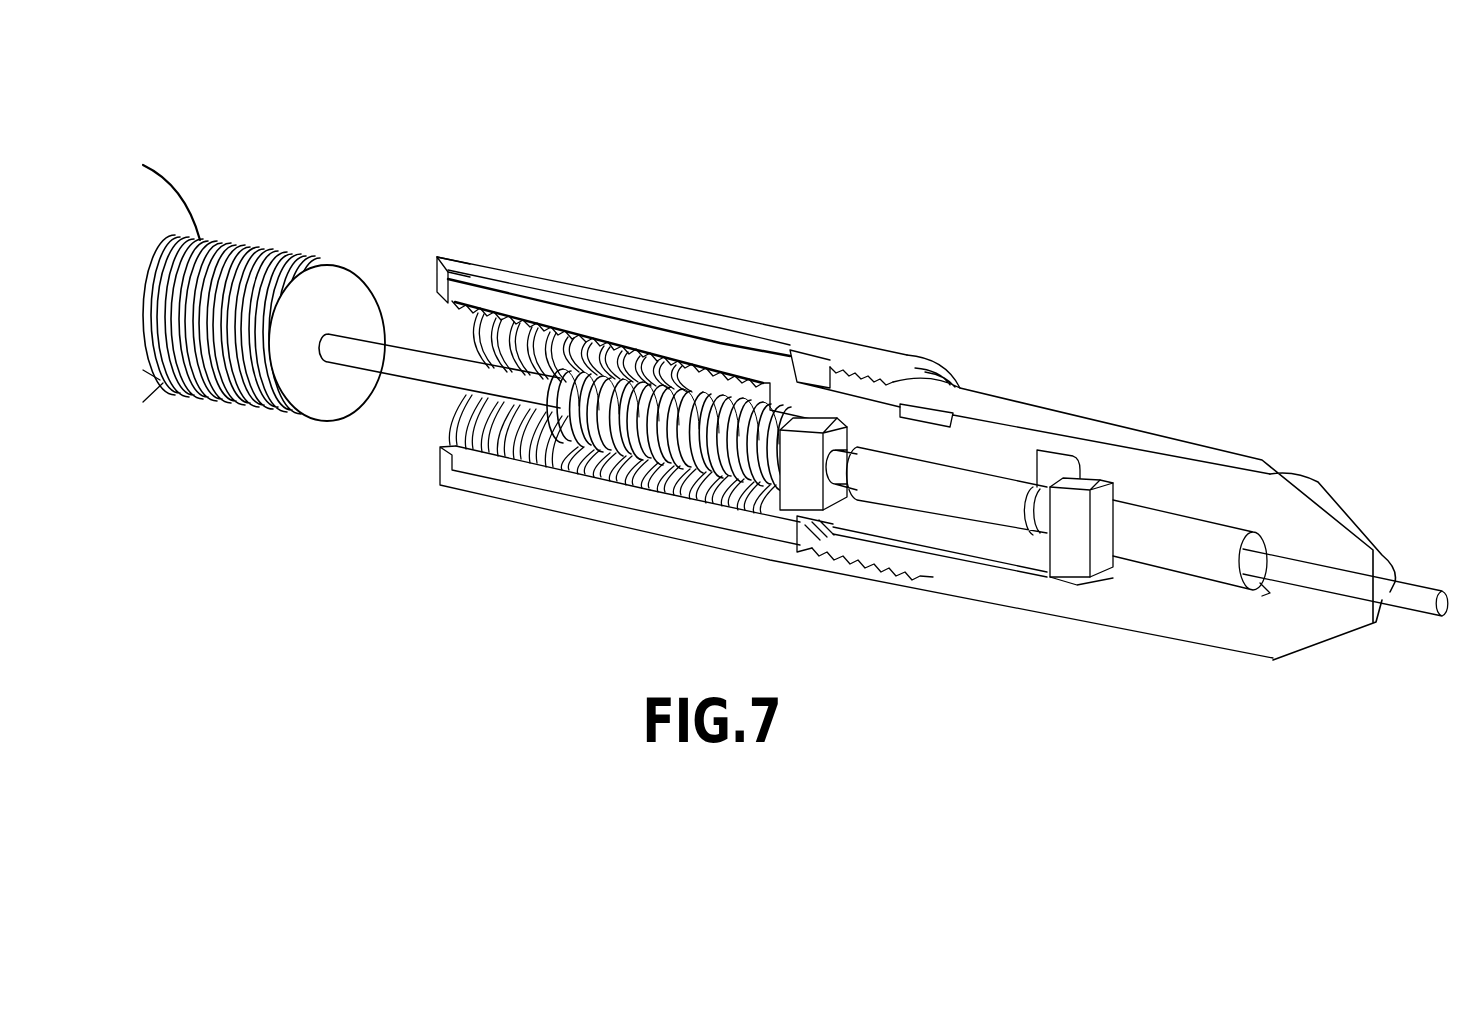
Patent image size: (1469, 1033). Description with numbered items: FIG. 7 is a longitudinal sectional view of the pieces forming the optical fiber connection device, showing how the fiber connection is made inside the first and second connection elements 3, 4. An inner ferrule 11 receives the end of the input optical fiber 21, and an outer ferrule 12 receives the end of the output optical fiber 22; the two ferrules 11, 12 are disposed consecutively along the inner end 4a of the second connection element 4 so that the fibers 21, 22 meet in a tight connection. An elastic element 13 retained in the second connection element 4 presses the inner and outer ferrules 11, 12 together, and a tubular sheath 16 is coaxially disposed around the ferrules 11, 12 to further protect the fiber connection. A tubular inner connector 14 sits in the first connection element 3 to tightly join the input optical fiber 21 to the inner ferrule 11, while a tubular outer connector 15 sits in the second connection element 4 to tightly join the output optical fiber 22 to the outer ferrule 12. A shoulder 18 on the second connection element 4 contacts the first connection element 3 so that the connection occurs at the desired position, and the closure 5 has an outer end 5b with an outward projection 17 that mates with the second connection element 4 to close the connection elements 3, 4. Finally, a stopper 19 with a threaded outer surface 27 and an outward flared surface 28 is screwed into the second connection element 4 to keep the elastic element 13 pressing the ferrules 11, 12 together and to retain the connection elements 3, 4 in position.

The first connection element 3 is at (1187, 420).
The second connection element 4 is at (605, 335).
The inner end of the second connection element 4a is at (843, 403).
The closure 5 is at (528, 263).
The outer end of the closure 5b is at (465, 258).
The inner ferrule 11 is at (1037, 513).
The outer ferrule 12 is at (850, 490).
The elastic element 13 is at (705, 423).
The inner connector 14 is at (1175, 535).
The outer connector 15 is at (787, 372).
The tubular sheath 16 is at (963, 480).
The outward projection 17 is at (432, 262).
The shoulder 18 is at (752, 398).
The stopper 19 is at (263, 197).
The input optical fiber 21 is at (1420, 610).
The output optical fiber 22 is at (408, 365).
The threaded outer surface 27 is at (277, 257).
The outward flared surface 28 is at (162, 200).